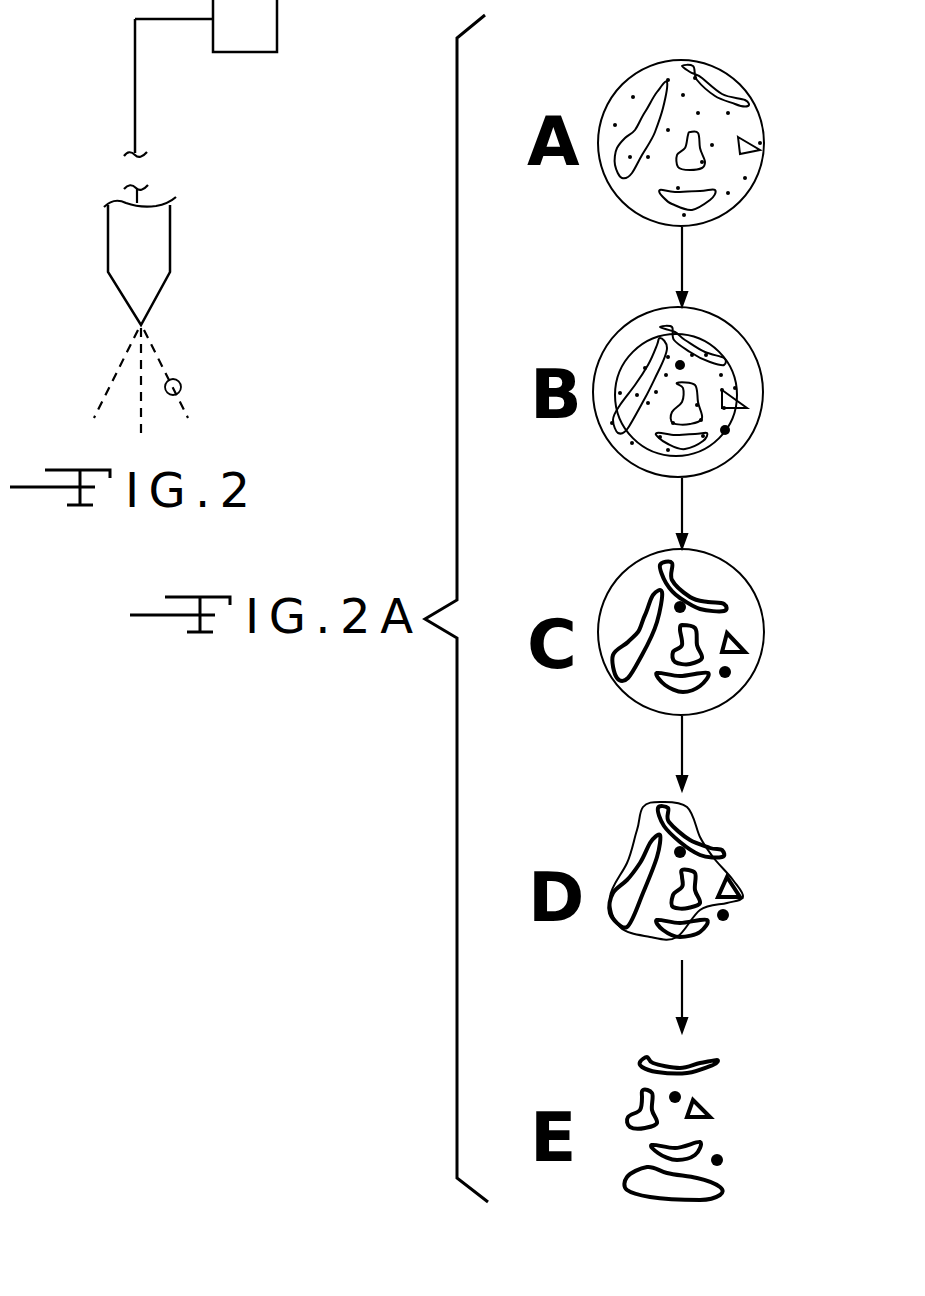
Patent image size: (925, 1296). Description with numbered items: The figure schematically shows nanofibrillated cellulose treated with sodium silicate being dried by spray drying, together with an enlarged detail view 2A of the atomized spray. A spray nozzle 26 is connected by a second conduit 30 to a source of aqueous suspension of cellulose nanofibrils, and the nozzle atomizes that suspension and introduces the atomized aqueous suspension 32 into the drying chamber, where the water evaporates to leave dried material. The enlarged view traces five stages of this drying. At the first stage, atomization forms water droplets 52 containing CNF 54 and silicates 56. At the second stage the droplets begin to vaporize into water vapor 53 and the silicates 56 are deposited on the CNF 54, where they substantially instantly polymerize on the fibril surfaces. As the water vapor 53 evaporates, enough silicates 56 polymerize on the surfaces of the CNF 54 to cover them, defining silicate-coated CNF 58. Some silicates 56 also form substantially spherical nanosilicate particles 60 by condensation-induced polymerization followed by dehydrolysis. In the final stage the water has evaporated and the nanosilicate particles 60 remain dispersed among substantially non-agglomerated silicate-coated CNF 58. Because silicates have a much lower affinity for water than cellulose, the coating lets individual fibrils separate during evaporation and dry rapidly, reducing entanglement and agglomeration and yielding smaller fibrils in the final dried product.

In FIG. 2, the spray nozzle 26 is at (163, 240).
In FIG. 2, the second conduit 30 is at (135, 53).
In FIG. 2, the atomized aqueous suspension 32 is at (115, 377).
In FIG. 2, the enlarged schematic view 2A is at (179, 381).
In FIG. 2A, the water droplets 52 is at (716, 76).
In FIG. 2A, the water vapor 53 is at (723, 320).
In FIG. 2A, the CNF 54 is at (649, 125).
In FIG. 2A, the silicates 56 is at (745, 180).
In FIG. 2A, the silicate-coated CNF 58 is at (672, 580).
In FIG. 2A, the spherical nanosilicate particles 60 is at (723, 921).